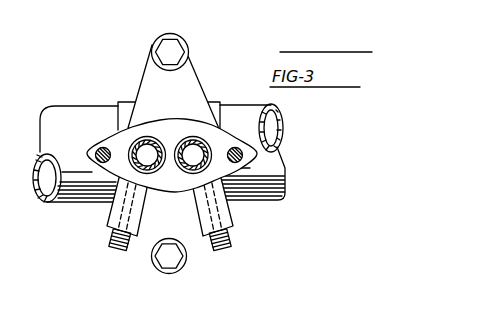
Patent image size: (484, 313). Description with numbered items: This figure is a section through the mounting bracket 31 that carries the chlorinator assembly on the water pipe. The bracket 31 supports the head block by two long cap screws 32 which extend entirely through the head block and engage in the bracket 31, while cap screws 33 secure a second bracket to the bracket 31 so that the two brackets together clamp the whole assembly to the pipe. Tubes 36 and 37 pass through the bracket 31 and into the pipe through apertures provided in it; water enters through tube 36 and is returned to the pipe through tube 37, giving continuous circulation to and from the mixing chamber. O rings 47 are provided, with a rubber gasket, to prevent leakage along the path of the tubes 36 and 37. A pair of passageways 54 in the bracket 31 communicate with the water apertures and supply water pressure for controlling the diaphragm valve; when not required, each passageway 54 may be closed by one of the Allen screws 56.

The bracket 31 is at (198, 86).
The cap screws 32 is at (97, 154).
The cap screws 33 is at (172, 50).
The tube 36 is at (152, 139).
The tube 37 is at (207, 147).
The O rings 47 is at (143, 129).
The passageways 54 is at (124, 221).
The Allen screws 56 is at (113, 251).